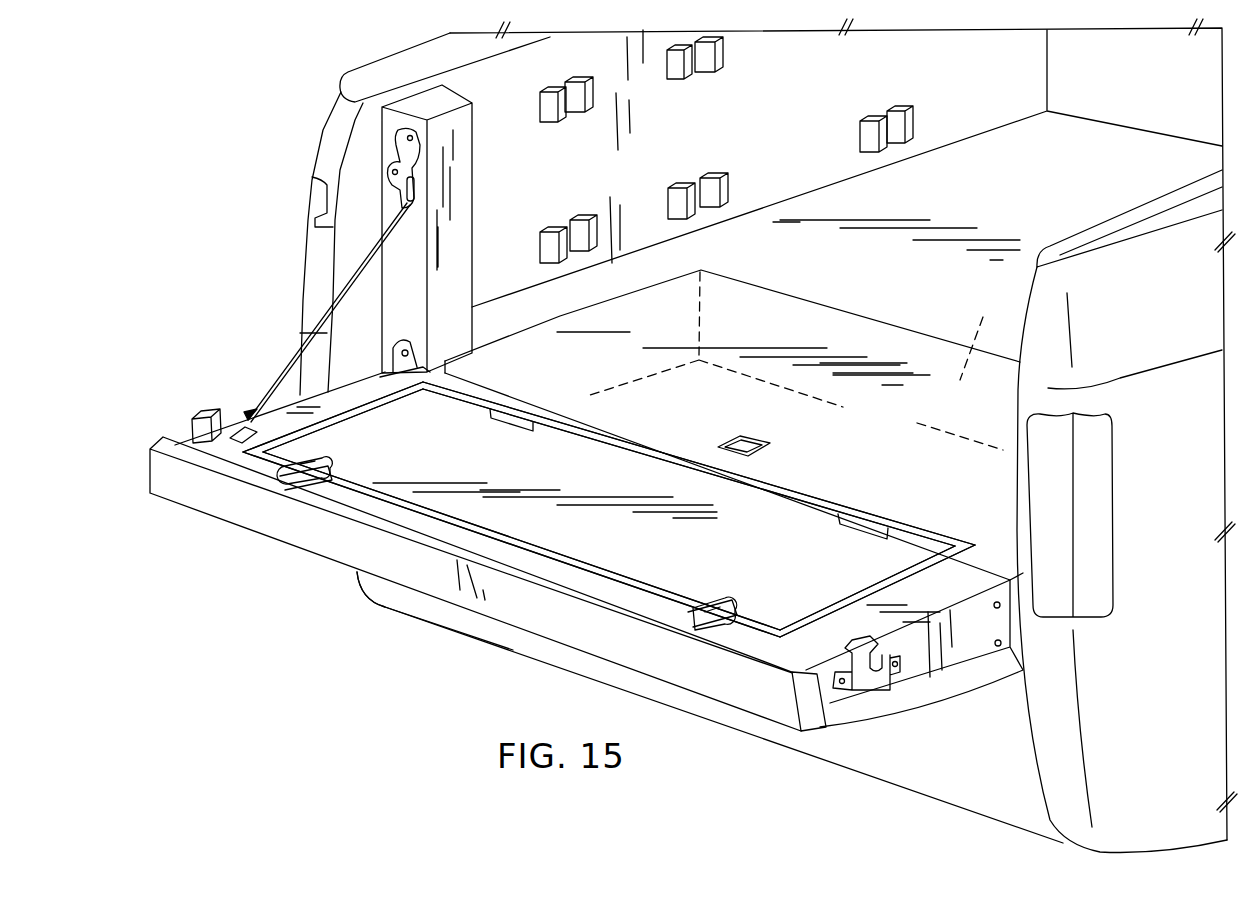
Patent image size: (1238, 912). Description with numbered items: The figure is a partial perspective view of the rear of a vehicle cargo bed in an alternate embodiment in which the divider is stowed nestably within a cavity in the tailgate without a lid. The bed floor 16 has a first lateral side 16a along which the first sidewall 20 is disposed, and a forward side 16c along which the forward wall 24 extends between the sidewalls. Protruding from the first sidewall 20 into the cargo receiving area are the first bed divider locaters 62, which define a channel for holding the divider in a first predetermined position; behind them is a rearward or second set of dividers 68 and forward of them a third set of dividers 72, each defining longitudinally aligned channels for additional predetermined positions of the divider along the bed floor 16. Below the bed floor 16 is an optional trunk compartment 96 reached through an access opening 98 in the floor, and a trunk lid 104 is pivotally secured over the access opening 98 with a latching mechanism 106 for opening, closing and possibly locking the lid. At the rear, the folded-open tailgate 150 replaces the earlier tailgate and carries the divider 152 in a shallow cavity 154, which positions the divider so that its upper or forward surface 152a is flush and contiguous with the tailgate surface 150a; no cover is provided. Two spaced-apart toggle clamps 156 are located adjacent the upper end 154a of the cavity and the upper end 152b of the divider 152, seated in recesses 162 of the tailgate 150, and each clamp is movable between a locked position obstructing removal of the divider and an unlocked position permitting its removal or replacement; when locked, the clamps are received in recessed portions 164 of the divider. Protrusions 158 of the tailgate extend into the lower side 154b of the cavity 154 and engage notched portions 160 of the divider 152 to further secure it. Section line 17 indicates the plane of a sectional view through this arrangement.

The bed floor 16 is at (1092, 153).
The first lateral side 16a is at (993, 137).
The forward side 16c is at (1158, 140).
The section line 17 is at (105, 426).
The first sidewall 20 is at (802, 150).
The forward wall 24 is at (1085, 83).
The first bed divider locaters 62 is at (727, 200).
The second set of dividers 68 is at (588, 108).
The third set of dividers 72 is at (908, 135).
The trunk compartment 96 is at (986, 336).
The access opening 98 is at (645, 288).
The trunk lid 104 is at (868, 335).
The latching mechanism 106 is at (743, 447).
The tailgate 150 is at (453, 605).
The tailgate surface 150a is at (275, 427).
The divider 152 is at (607, 472).
The upper or forward surface 152a is at (558, 452).
The upper end 152b is at (427, 540).
The cavity 154 is at (930, 562).
The upper end 154a is at (547, 553).
The lower side 154b is at (793, 503).
The toggle clamps 156 is at (300, 467).
The protrusions 158 is at (513, 417).
The notched portions 160 is at (530, 425).
The recesses 162 is at (295, 477).
The recessed portions 164 is at (307, 462).